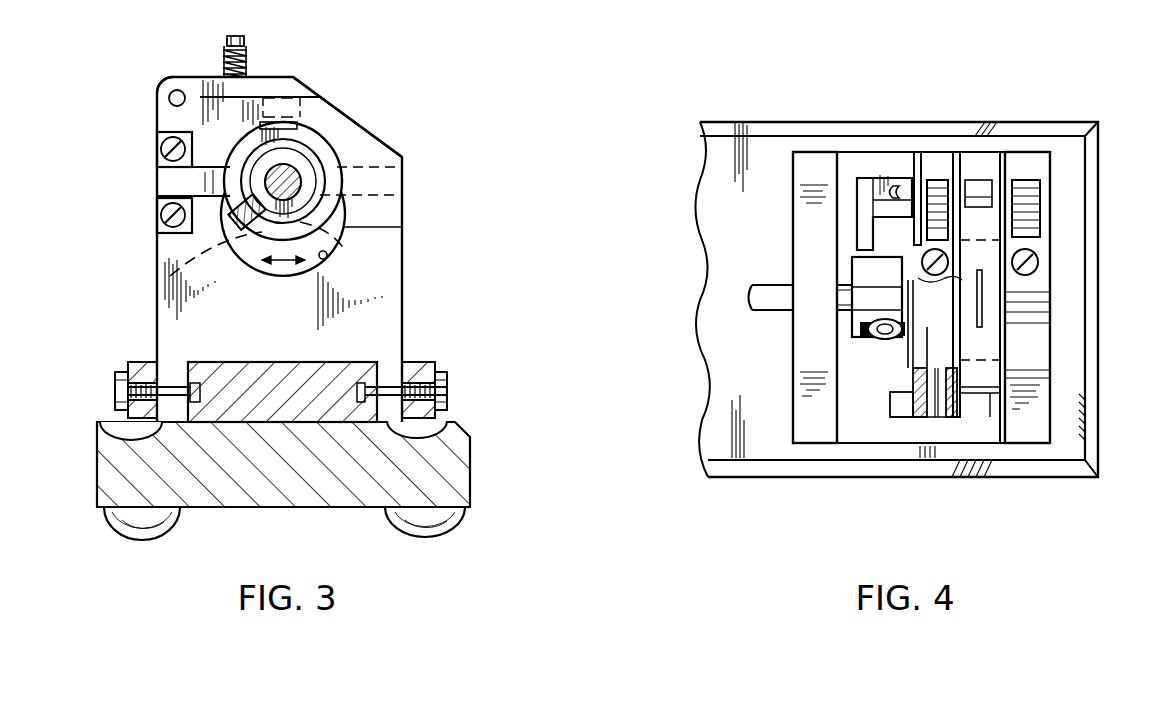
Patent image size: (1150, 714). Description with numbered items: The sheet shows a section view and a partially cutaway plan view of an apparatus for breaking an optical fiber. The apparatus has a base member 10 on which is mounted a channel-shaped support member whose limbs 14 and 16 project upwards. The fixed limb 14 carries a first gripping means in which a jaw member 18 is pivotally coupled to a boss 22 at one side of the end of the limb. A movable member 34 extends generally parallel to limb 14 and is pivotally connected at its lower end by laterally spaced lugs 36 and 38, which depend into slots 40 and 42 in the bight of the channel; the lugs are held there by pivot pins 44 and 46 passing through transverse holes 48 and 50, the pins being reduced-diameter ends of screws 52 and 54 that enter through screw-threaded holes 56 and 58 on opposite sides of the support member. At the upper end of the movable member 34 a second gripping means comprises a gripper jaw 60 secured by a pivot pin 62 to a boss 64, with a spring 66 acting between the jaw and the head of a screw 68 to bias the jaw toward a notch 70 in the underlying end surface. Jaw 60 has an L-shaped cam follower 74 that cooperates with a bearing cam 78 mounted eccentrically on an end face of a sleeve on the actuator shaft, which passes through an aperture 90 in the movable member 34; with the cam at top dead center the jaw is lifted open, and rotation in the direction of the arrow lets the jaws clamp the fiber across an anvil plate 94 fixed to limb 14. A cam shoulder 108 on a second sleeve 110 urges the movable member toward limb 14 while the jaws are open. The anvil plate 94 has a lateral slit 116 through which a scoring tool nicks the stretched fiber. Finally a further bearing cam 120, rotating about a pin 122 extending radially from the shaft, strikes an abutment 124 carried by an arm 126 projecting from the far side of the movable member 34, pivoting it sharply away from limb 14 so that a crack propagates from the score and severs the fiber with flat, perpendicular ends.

In FIG. 3, the base member 10 is at (466, 460).
In FIG. 4, the base member 10 is at (728, 238).
In FIG. 4, the limb 14 is at (1035, 352).
In FIG. 4, the limb 16 is at (795, 345).
In FIG. 4, the jaw member 18 is at (1040, 250).
In FIG. 4, the boss 22 is at (1035, 165).
In FIG. 3, the movable member 34 is at (345, 269).
In FIG. 4, the movable member 34 is at (912, 398).
In FIG. 3, the lug 36 is at (178, 362).
In FIG. 3, the lug 38 is at (386, 368).
In FIG. 3, the slot 40 is at (153, 356).
In FIG. 3, the slot 42 is at (400, 357).
In FIG. 3, the pivot pin 44 is at (196, 403).
In FIG. 3, the pivot pin 46 is at (361, 403).
In FIG. 3, the transverse hole 48 is at (113, 428).
In FIG. 3, the transverse hole 50 is at (447, 420).
In FIG. 3, the screw 52 is at (117, 374).
In FIG. 3, the screw 54 is at (448, 378).
In FIG. 3, the screw-threaded hole 56 is at (148, 360).
In FIG. 3, the screw-threaded hole 58 is at (420, 362).
In FIG. 3, the gripper jaw 60 is at (293, 92).
In FIG. 4, the gripper jaw 60 is at (950, 193).
In FIG. 3, the pivot pin 62 is at (168, 98).
In FIG. 3, the boss 64 is at (165, 81).
In FIG. 3, the spring 66 is at (248, 58).
In FIG. 3, the screw 68 is at (226, 46).
In FIG. 3, the notch 70 is at (302, 96).
In FIG. 3, the cam follower 74 is at (322, 117).
In FIG. 3, the cam 78 is at (343, 226).
In FIG. 4, the cam 78 is at (955, 285).
In FIG. 3, the aperture 90 is at (328, 258).
In FIG. 4, the anvil plate 94 is at (968, 267).
In FIG. 4, the cam shoulder 108 is at (928, 183).
In FIG. 4, the second sleeve 110 is at (860, 273).
In FIG. 4, the slit 116 is at (983, 303).
In FIG. 3, the cam 120 is at (222, 241).
In FIG. 4, the cam 120 is at (873, 335).
In FIG. 3, the pin 122 is at (200, 268).
In FIG. 4, the pin 122 is at (893, 340).
In FIG. 3, the abutment 124 is at (190, 188).
In FIG. 4, the abutment 124 is at (858, 195).
In FIG. 4, the arm 126 is at (892, 173).